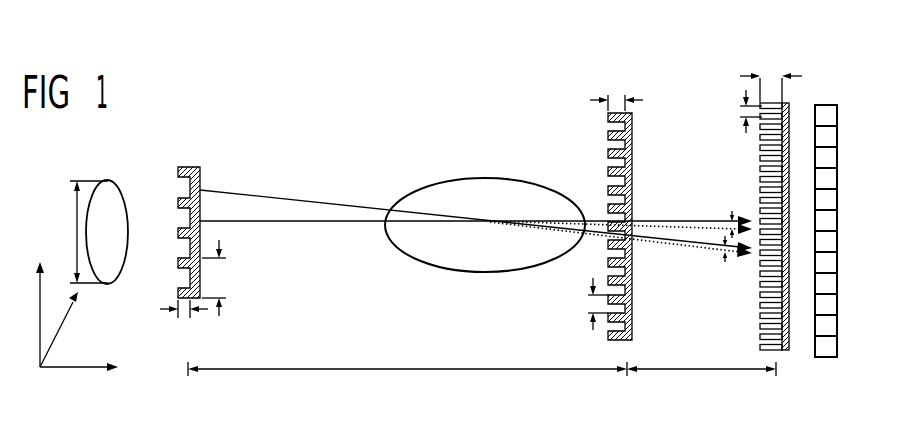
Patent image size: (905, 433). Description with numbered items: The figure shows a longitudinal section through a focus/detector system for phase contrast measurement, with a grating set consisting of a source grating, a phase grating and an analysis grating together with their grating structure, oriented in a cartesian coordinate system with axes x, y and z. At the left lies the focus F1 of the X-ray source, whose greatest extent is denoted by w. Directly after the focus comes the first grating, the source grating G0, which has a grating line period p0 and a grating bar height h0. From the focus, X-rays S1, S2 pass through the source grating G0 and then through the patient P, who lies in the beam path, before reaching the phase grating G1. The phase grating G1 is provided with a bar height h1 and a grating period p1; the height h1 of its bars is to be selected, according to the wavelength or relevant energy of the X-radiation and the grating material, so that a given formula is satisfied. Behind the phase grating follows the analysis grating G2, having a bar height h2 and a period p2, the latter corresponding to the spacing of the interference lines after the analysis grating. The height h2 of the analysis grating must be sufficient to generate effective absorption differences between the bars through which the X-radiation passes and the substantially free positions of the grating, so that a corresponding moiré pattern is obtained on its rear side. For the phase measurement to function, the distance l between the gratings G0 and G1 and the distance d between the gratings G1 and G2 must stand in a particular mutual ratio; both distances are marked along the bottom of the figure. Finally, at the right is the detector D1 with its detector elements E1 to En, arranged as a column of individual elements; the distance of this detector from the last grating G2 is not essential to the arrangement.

The focus F1 is at (113, 181).
The extent of the focus w is at (76, 226).
The source grating G0 is at (200, 169).
The height of the grating bars h0 is at (183, 315).
The grating period of the source grating p0 is at (222, 277).
The X-ray S1 is at (311, 200).
The X-ray S2 is at (317, 222).
The patient P is at (484, 178).
The phase grating G1 is at (632, 152).
The height of the grating bars h1 is at (614, 100).
The grating period of the phase grating p1 is at (590, 303).
The analysis grating G2 is at (782, 352).
The height of the grating bars h2 is at (771, 78).
The large period of the detector strips p2 is at (742, 111).
The detector D1 is at (829, 94).
The first detector element E1 is at (825, 117).
The nth detector element En is at (826, 347).
The distance from the source grating to the phase grating l is at (416, 368).
The distance from the phase grating to the analysis grating d is at (705, 370).
The cartesian coordinate x is at (33, 307).
The cartesian coordinate y is at (65, 329).
The cartesian coordinate z is at (82, 378).